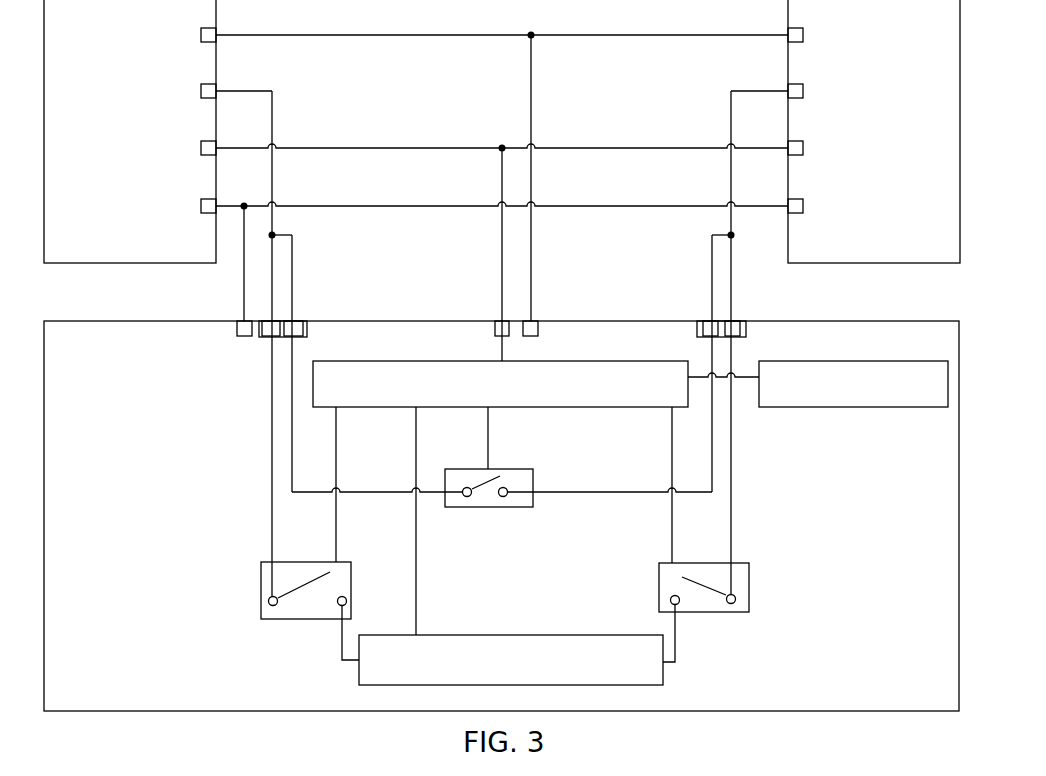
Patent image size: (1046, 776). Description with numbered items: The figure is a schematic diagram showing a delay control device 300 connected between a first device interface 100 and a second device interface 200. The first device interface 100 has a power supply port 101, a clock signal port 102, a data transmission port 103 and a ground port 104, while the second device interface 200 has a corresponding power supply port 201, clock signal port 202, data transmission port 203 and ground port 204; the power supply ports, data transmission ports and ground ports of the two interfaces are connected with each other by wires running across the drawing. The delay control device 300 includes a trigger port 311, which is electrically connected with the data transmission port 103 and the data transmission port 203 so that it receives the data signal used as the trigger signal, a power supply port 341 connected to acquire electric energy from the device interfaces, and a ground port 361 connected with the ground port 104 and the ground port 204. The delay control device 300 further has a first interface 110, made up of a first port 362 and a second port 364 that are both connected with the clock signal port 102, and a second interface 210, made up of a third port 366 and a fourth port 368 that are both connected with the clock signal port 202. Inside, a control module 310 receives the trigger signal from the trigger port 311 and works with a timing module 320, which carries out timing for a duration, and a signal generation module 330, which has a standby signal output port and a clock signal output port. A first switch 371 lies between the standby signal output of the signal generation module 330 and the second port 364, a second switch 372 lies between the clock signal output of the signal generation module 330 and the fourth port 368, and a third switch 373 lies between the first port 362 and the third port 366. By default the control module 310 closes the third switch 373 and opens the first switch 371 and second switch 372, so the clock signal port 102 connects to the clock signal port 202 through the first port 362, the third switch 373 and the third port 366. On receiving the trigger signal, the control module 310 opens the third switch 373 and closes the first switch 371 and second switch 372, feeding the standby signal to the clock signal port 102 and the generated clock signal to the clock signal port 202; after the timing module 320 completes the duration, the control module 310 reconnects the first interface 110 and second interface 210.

The first device interface 100 is at (874, 131).
The power supply port 101 is at (797, 36).
The clock signal port 102 is at (797, 92).
The data transmission port 103 is at (796, 151).
The ground port 104 is at (796, 209).
The second device interface 200 is at (130, 131).
The power supply port 201 is at (204, 31).
The clock signal port 202 is at (204, 88).
The data transmission port 203 is at (204, 151).
The ground port 204 is at (204, 209).
The delay control device 300 is at (501, 516).
The control module 310 is at (500, 384).
The trigger port 311 is at (497, 327).
The timing module 320 is at (853, 384).
The signal generation module 330 is at (511, 660).
The power supply port 341 is at (238, 330).
The ground port 361 is at (537, 333).
The first port 362 is at (708, 320).
The second port 364 is at (733, 329).
The third port 366 is at (294, 331).
The fourth port 368 is at (270, 331).
The first interface 110 is at (719, 315).
The second interface 210 is at (299, 333).
The first switch 371 is at (749, 587).
The second switch 372 is at (261, 588).
The third switch 373 is at (488, 507).